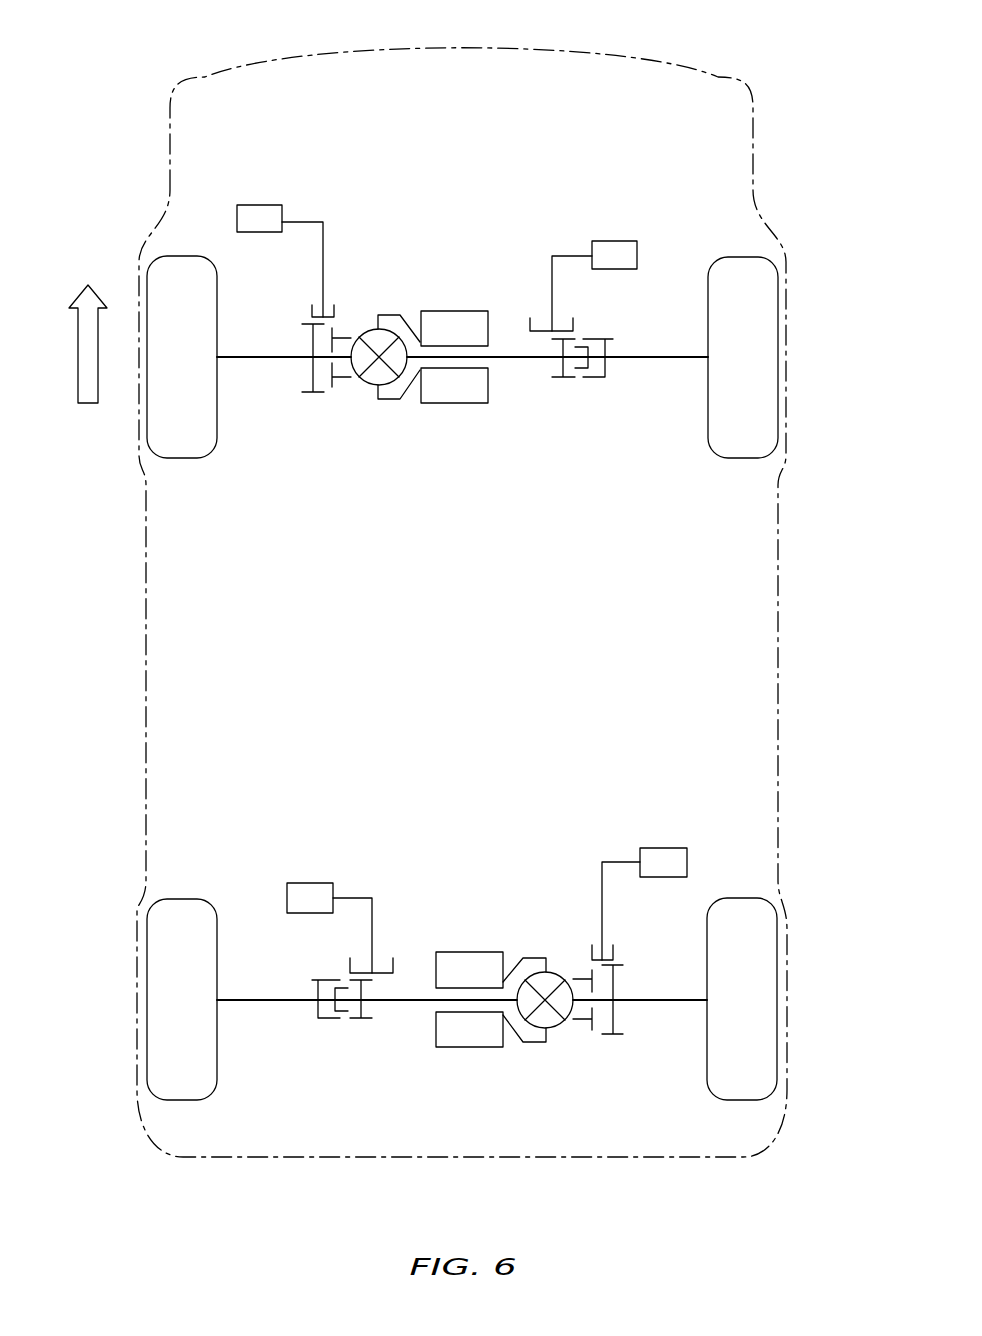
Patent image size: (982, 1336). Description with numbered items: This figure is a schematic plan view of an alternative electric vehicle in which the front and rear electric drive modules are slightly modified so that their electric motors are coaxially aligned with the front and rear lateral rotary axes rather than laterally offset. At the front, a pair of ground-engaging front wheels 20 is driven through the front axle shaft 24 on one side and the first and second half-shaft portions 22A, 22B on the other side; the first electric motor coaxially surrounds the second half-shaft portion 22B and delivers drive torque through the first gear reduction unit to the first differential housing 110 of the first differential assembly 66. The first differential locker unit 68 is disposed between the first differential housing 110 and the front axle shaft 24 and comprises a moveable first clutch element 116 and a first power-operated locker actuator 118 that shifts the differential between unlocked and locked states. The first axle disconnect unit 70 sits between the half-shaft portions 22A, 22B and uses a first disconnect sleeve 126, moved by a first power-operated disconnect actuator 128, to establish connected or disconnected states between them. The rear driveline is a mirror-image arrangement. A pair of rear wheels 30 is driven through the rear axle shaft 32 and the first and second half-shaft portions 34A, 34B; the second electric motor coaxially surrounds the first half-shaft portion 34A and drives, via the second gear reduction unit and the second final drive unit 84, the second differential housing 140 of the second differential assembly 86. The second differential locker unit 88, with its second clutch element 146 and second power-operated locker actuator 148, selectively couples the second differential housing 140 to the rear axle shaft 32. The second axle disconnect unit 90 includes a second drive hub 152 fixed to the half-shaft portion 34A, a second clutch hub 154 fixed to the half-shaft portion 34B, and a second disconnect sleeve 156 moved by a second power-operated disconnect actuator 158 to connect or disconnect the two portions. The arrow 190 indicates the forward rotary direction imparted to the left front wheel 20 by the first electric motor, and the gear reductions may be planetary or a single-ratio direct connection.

The front wheels 20 is at (179, 458).
The first half-shaft portion 22A is at (515, 358).
The second half-shaft portion 22B is at (643, 357).
The front axle shaft 24 is at (255, 358).
The rear wheels 30 is at (190, 899).
The rear axle shaft 32 is at (675, 1000).
The first half-shaft portion 34A is at (420, 1002).
The second half-shaft portion 34B is at (275, 1000).
The first differential assembly 66 is at (361, 330).
The first differential locker unit 68 is at (292, 440).
The first axle disconnect unit 70 is at (589, 400).
The second final drive unit 84 is at (565, 940).
The second differential assembly 86 is at (553, 1032).
The second differential locker unit 88 is at (637, 1025).
The second axle disconnect unit 90 is at (343, 1042).
The first differential housing 110 is at (350, 386).
The first clutch element 116 is at (309, 305).
The first power-operated locker actuator 118 is at (258, 205).
The first disconnect sleeve 126 is at (528, 327).
The first power-operated disconnect actuator 128 is at (644, 241).
The second differential housing 140 is at (580, 1021).
The second clutch element 146 is at (613, 950).
The second power-operated locker actuator 148 is at (680, 848).
The second drive hub 152 is at (365, 1020).
The second clutch hub 154 is at (317, 1012).
The second disconnect sleeve 156 is at (393, 965).
The second power-operated disconnect actuator 158 is at (287, 893).
The arrow 190 is at (75, 376).